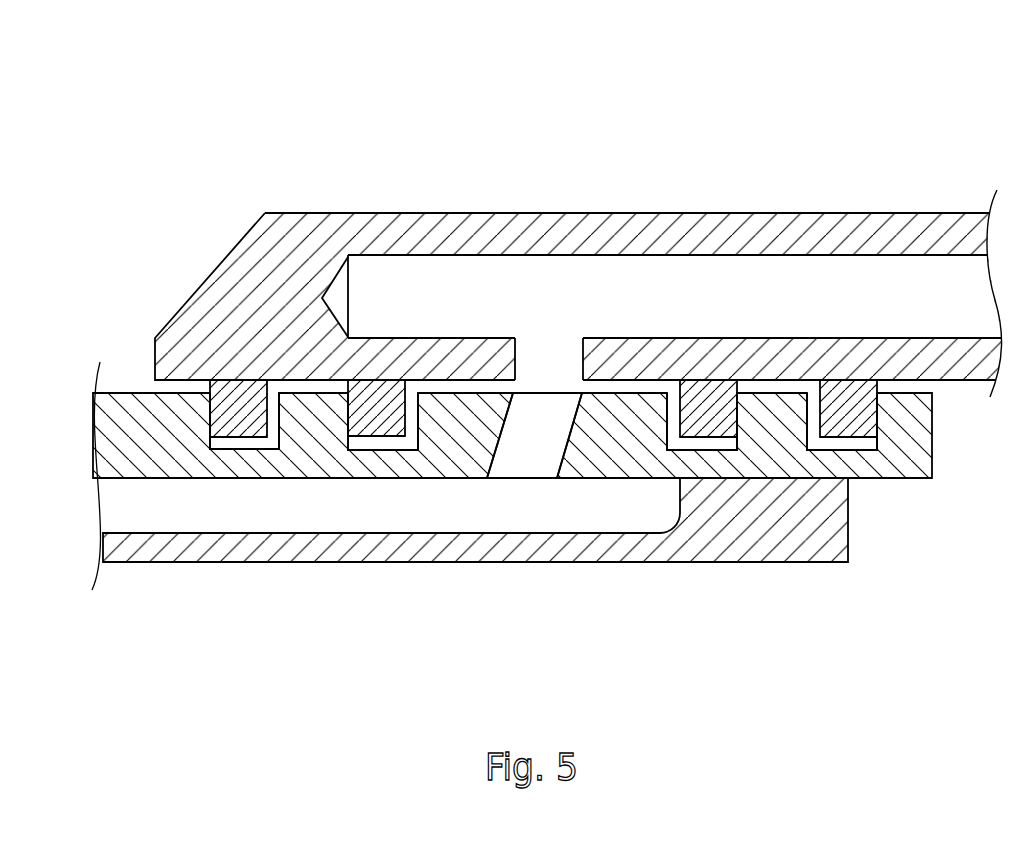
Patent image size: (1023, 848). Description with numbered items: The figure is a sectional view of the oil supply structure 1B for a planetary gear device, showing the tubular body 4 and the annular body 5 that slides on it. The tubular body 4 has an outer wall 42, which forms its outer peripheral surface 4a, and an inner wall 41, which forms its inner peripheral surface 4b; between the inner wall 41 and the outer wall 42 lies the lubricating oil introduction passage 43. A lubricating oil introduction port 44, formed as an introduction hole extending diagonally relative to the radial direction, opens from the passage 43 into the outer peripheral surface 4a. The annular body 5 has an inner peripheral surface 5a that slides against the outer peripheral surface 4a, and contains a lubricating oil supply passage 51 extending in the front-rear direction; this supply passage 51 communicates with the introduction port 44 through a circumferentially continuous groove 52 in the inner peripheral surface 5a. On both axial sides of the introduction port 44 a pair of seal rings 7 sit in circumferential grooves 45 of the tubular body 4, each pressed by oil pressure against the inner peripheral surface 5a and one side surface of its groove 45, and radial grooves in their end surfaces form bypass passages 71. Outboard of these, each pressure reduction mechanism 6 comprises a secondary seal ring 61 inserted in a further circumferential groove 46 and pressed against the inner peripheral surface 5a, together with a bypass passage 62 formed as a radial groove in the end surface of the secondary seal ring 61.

The oil supply structure 1B is at (547, 368).
The tubular body 4 is at (512, 475).
The outer peripheral surface of the tubular body 4a is at (125, 393).
The inner peripheral surface of the tubular body 4b is at (528, 563).
The inner wall 41 is at (806, 527).
The outer wall 42 is at (630, 457).
The lubricating oil introduction passage 43 is at (312, 515).
The lubricating oil introduction port 44 is at (502, 438).
The grooves 45 is at (238, 447).
The grooves 46 is at (400, 444).
The annular body 5 is at (571, 374).
The inner peripheral surface of the annular body 5a is at (183, 382).
The lubricating oil supply passage 51 is at (610, 276).
The groove 52 is at (518, 357).
The pressure reduction mechanism 6 is at (391, 474).
The secondary seal ring 61 is at (385, 400).
The bypass passage 62 is at (357, 432).
The seal rings 7 is at (258, 397).
The bypass passages 71 is at (231, 410).